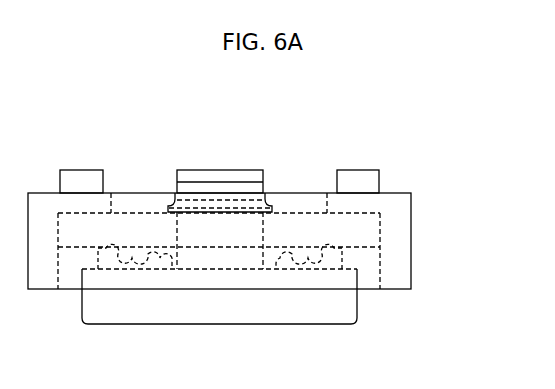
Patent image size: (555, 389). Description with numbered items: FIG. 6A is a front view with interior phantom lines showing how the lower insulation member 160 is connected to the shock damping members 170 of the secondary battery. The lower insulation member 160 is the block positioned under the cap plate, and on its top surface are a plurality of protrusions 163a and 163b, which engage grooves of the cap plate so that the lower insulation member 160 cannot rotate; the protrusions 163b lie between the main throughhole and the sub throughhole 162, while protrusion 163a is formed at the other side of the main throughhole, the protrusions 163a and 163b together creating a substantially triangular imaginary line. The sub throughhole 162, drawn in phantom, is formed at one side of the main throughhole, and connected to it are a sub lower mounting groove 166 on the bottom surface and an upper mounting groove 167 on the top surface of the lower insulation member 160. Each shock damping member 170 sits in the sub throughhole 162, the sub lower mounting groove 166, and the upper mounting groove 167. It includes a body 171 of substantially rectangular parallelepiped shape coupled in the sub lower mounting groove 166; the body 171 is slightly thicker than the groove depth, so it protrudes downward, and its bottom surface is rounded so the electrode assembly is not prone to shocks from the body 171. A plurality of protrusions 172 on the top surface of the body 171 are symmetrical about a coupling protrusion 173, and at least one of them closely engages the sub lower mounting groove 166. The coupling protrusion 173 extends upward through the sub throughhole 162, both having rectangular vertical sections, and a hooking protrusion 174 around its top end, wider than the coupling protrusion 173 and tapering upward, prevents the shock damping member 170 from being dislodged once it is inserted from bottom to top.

The lower insulation member 160 is at (428, 209).
The sub throughhole 162 is at (263, 233).
The protrusion 163a is at (229, 176).
The protrusion 163b is at (359, 173).
The sub lower mounting groove 166 is at (73, 247).
The upper mounting groove 167 is at (295, 210).
The shock damping member 170 is at (358, 331).
The body 171 is at (247, 315).
The protrusions 172 is at (152, 257).
The coupling protrusion 173 is at (208, 262).
The hooking protrusion 174 is at (201, 186).